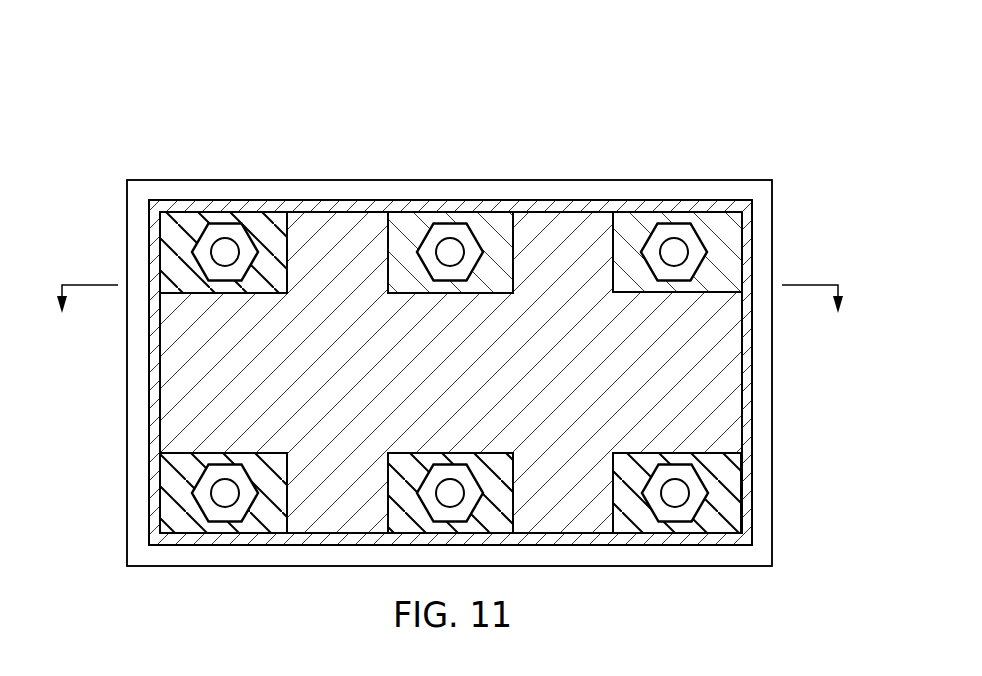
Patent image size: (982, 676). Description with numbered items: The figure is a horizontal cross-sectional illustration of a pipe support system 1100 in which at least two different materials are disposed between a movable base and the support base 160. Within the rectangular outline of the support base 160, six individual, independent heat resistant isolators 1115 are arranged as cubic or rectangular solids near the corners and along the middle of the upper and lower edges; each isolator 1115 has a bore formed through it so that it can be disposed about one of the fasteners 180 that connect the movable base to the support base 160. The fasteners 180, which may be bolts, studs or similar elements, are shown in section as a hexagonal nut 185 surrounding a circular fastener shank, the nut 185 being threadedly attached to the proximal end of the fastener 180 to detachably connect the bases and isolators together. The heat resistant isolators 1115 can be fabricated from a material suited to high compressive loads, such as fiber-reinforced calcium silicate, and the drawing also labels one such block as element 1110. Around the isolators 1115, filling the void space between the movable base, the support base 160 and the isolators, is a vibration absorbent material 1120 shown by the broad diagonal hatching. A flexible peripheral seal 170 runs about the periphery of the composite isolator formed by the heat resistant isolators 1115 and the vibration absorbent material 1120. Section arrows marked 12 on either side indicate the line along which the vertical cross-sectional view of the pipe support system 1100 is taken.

The pipe support system 1100 is at (688, 62).
The support base 160 is at (350, 180).
The flexible peripheral seal 170 is at (157, 378).
The vibration absorbent material 1120 is at (697, 393).
The mounting block 1110 is at (180, 212).
The heat resistant isolator 1115 is at (497, 247).
The nut 185 is at (438, 222).
The fastener 180 is at (672, 250).
The line 12- 12 is at (450, 316).